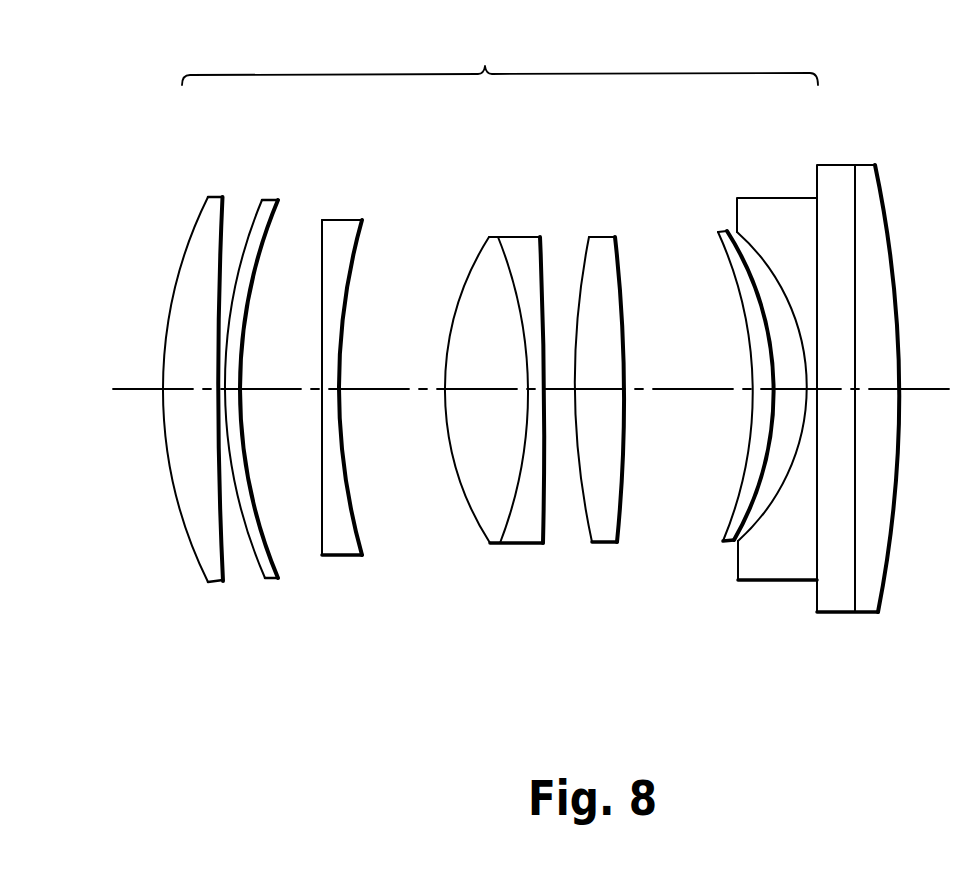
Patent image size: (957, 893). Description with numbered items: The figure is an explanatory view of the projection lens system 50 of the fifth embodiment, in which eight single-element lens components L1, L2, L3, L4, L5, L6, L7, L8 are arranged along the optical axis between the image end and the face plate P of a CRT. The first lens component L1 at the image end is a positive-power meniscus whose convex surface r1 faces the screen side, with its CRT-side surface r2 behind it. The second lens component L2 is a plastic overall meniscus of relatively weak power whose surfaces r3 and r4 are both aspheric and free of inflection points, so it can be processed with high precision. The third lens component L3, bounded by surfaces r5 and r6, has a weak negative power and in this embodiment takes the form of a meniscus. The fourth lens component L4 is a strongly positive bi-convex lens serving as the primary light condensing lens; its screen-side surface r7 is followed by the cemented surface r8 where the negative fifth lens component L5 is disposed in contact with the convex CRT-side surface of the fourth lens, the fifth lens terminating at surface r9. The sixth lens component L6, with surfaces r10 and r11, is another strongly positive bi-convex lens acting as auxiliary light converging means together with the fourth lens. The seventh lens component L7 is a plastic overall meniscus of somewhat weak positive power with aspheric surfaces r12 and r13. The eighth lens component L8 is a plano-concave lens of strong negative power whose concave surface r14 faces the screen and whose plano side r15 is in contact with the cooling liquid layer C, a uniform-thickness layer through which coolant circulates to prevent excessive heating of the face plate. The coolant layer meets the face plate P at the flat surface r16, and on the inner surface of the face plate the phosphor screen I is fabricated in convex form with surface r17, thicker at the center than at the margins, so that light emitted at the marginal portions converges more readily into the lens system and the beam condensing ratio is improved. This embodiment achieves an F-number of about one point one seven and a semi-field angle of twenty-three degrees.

The projection lens system 50 is at (500, 58).
The first lens component L1 is at (196, 383).
The second lens component L2 is at (262, 387).
The third lens component L3 is at (352, 389).
The fourth lens component L4 is at (490, 383).
The fifth lens component L5 is at (528, 384).
The sixth lens component L6 is at (622, 379).
The seventh lens component L7 is at (706, 387).
The eighth lens component L8 is at (770, 402).
The first surface r1 is at (200, 567).
The second surface r2 is at (224, 583).
The third surface r3 is at (265, 582).
The fourth surface r4 is at (280, 580).
The fifth surface r5 is at (323, 558).
The sixth surface r6 is at (363, 557).
The seventh surface r7 is at (474, 514).
The eighth surface r8 is at (500, 540).
The ninth surface r9 is at (543, 546).
The tenth surface r10 is at (592, 545).
The eleventh surface r11 is at (617, 544).
The twelfth surface r12 is at (720, 529).
The thirteenth surface r13 is at (725, 548).
The fourteenth surface r14 is at (750, 530).
The fifteenth surface r15 is at (817, 568).
The sixteenth surface r16 is at (854, 614).
The seventeenth surface r17 is at (885, 572).
The cooling liquid layer C is at (815, 360).
The face plate P is at (861, 385).
The phosphor screen I is at (914, 384).